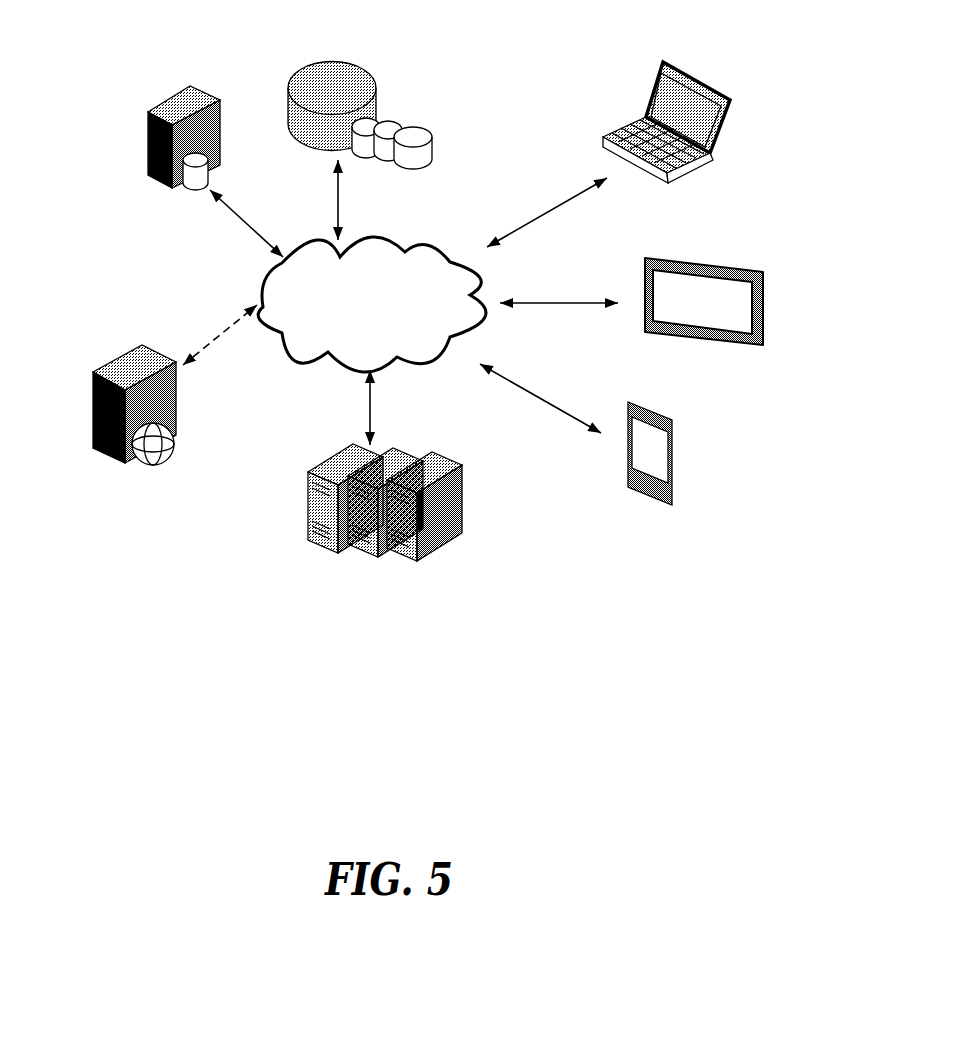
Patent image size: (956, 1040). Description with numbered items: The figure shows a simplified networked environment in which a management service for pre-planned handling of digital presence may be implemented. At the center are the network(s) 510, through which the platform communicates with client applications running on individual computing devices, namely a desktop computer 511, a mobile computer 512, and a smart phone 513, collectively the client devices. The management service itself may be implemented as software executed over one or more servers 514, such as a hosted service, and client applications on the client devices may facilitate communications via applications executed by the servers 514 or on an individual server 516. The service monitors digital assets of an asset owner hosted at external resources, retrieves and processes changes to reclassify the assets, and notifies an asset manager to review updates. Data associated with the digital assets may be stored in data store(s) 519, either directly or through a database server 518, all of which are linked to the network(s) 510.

The network(s) 510 is at (377, 226).
The desktop computer 511 is at (704, 60).
The mobile computer 512 is at (737, 243).
The smart phone 513 is at (680, 420).
The servers 514 is at (334, 449).
The individual server 516 is at (112, 353).
The database server 518 is at (183, 199).
The data store(s) 519 is at (348, 40).